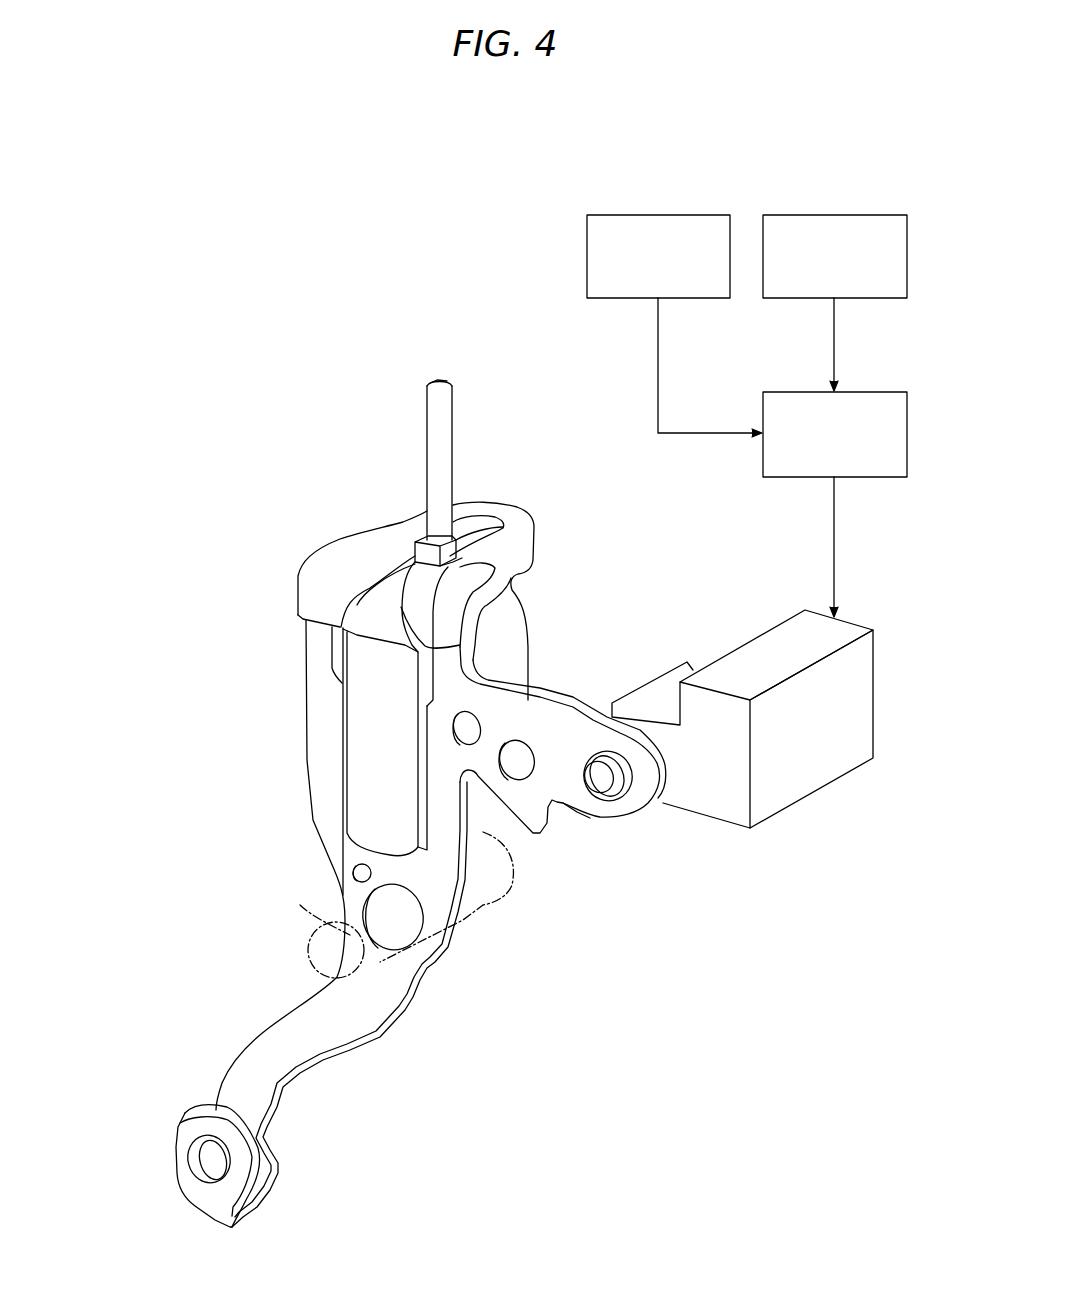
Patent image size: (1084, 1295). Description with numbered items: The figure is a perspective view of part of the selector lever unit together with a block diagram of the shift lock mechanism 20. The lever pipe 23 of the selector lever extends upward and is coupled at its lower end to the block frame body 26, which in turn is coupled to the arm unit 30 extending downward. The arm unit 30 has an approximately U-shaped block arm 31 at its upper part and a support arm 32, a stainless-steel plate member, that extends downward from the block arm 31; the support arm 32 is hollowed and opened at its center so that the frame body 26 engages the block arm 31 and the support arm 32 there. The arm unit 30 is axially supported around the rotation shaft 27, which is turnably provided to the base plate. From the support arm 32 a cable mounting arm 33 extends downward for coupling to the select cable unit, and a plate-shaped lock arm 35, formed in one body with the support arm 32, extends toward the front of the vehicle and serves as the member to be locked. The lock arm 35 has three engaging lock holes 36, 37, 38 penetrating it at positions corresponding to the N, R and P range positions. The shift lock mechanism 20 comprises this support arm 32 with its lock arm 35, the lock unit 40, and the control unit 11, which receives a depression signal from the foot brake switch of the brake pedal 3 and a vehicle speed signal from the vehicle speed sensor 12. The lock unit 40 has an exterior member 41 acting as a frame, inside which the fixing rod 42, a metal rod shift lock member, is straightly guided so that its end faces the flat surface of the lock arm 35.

The brake pedal 3 is at (718, 215).
The vehicle speed sensor 12 is at (893, 215).
The control unit 11 is at (893, 392).
The shift lock mechanism 20 is at (754, 170).
The lever pipe 23 is at (425, 459).
The arm unit 30 is at (530, 491).
The block arm 31 is at (297, 587).
The support arm 32 is at (303, 647).
The frame body 26 is at (353, 733).
The rotation shaft 27 is at (300, 905).
The cable mounting arm 33 is at (175, 1160).
The lock arm 35 is at (583, 700).
The lock hole 36 is at (615, 800).
The lock hole 37 is at (530, 740).
The lock hole 38 is at (470, 712).
The lock unit 40 is at (742, 705).
The exterior member 41 is at (802, 790).
The fixing rod 42 is at (593, 790).